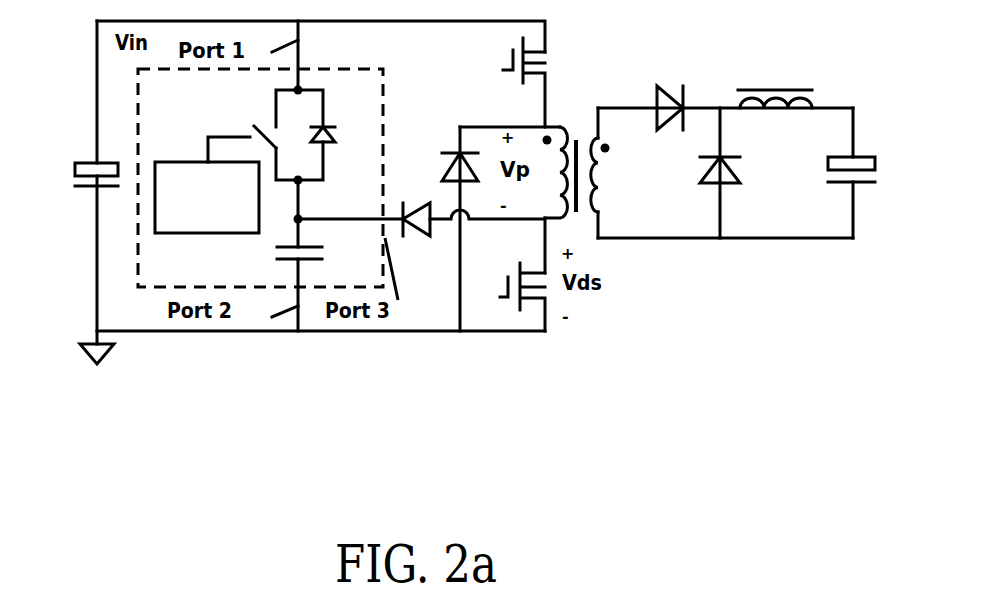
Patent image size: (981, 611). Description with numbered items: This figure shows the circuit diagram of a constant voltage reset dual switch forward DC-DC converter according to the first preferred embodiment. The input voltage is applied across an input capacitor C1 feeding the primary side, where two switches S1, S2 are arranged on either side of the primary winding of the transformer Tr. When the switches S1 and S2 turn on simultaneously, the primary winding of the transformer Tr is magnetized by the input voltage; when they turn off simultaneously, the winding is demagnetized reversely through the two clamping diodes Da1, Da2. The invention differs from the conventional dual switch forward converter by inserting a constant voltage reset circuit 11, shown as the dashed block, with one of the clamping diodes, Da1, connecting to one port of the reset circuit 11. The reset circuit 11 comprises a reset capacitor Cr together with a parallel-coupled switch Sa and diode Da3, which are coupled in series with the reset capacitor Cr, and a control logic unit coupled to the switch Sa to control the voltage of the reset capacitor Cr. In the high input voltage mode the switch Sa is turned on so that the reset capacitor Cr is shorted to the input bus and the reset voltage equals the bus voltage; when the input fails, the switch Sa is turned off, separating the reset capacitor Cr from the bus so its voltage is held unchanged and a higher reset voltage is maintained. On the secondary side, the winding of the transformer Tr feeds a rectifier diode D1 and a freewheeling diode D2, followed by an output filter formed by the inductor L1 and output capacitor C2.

The constant voltage reset circuit 11 is at (268, 183).
The input capacitor C1 is at (69, 172).
The output capacitor C2 is at (854, 188).
The output inductor L1 is at (775, 83).
The rectifier diode D1 is at (664, 92).
The freewheeling diode D2 is at (692, 172).
The switch S1 is at (499, 82).
The switch S2 is at (502, 297).
The transformer Tr is at (576, 149).
The reset capacitor Cr is at (296, 255).
The switch Sa is at (242, 130).
The clamping diode Da1 is at (369, 240).
The clamping diode Da2 is at (435, 144).
The diode Da3 is at (344, 121).